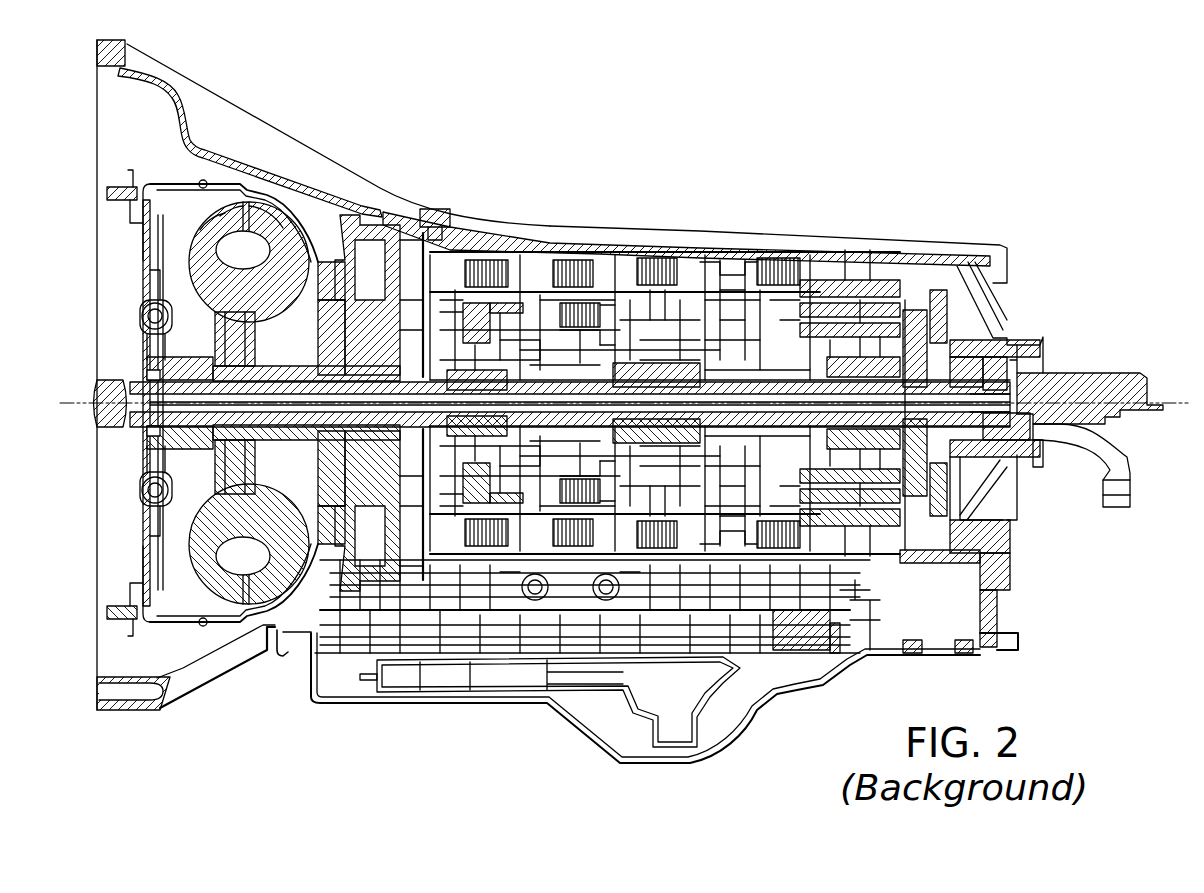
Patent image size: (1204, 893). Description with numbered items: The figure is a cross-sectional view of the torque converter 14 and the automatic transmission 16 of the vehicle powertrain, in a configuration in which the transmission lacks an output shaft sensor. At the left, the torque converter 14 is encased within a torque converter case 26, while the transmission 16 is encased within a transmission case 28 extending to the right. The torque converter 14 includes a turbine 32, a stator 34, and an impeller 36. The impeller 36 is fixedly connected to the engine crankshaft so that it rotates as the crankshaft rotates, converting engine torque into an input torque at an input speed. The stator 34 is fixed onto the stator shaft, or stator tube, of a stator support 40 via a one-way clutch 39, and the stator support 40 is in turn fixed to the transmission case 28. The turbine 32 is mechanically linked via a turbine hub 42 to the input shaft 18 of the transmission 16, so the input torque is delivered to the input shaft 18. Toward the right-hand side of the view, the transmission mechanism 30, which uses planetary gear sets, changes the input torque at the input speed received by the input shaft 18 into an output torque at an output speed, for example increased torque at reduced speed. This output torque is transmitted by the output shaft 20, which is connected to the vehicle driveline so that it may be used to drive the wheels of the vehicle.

The torque converter 14 is at (305, 200).
The automatic transmission 16 is at (748, 233).
The input shaft 18 is at (278, 415).
The output shaft 20 is at (1017, 380).
The torque converter case 26 is at (218, 147).
The transmission case 28 is at (583, 253).
The transmission mechanism 30 is at (745, 680).
The turbine 32 is at (213, 227).
The stator 34 is at (303, 238).
The impeller 36 is at (277, 207).
The one-way clutch 39 is at (228, 434).
The stator support 40 is at (424, 232).
The turbine hub 42 is at (180, 432).